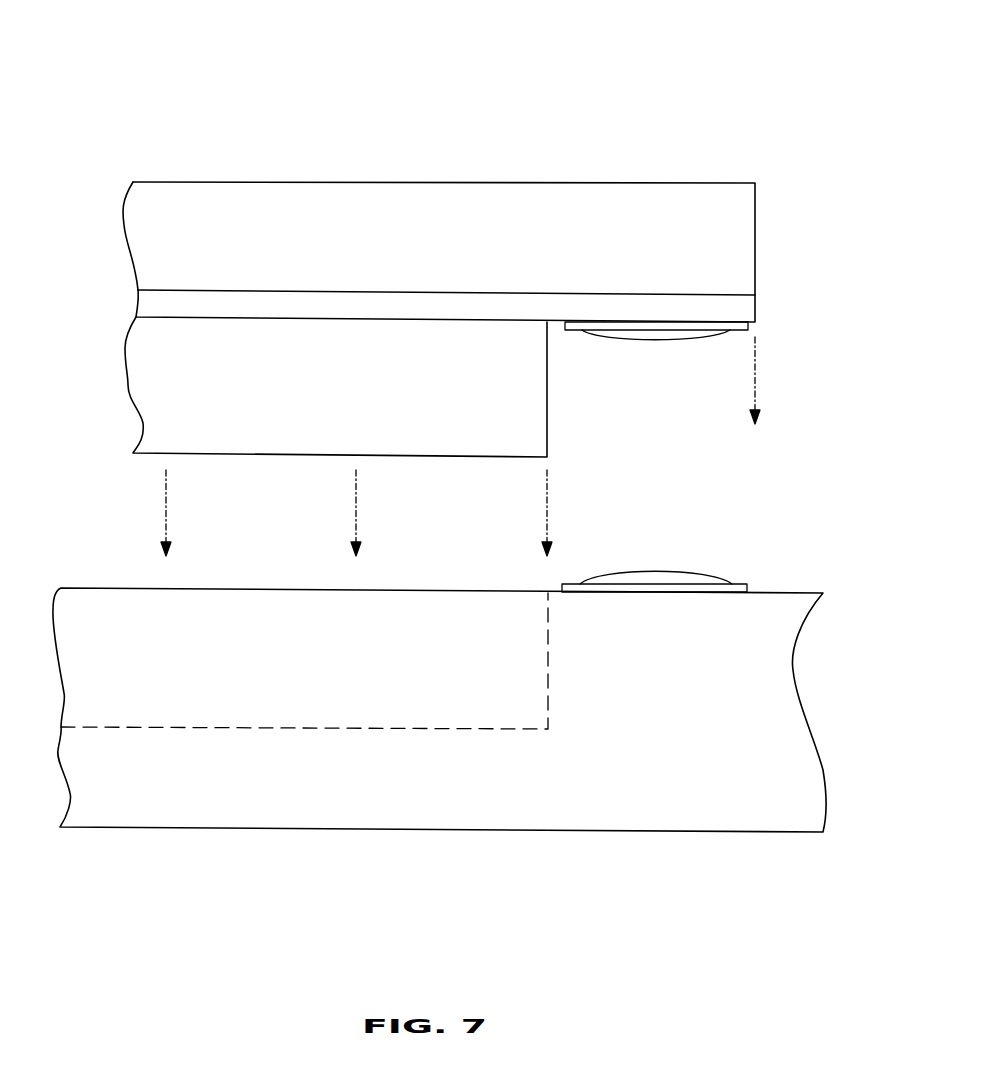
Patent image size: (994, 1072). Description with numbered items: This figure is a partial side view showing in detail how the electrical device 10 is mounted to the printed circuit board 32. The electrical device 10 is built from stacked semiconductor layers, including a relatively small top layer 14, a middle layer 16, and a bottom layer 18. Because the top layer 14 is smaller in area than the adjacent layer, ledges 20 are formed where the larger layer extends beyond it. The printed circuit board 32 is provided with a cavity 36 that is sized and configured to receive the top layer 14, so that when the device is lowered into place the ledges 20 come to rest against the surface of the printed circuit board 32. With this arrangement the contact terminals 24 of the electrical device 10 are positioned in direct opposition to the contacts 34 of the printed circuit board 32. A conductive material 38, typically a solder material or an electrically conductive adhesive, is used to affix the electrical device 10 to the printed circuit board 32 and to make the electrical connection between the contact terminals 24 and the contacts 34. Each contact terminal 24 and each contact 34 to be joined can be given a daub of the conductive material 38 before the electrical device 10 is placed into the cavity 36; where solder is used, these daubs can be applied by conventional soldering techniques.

The electrical device 10 is at (583, 118).
The top layer 14 is at (150, 350).
The middle layer 16 is at (740, 305).
The bottom layer 18 is at (740, 220).
The ledges 20 is at (597, 396).
The contact terminals 24 is at (737, 330).
The printed circuit board 32 is at (597, 797).
The contacts 34 is at (723, 580).
The cavity 36 is at (268, 744).
The conductive material 38 is at (652, 340).